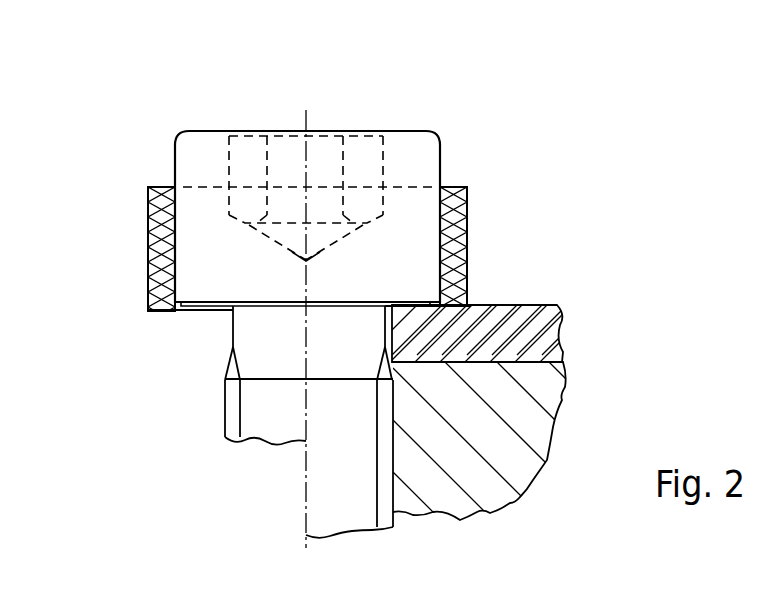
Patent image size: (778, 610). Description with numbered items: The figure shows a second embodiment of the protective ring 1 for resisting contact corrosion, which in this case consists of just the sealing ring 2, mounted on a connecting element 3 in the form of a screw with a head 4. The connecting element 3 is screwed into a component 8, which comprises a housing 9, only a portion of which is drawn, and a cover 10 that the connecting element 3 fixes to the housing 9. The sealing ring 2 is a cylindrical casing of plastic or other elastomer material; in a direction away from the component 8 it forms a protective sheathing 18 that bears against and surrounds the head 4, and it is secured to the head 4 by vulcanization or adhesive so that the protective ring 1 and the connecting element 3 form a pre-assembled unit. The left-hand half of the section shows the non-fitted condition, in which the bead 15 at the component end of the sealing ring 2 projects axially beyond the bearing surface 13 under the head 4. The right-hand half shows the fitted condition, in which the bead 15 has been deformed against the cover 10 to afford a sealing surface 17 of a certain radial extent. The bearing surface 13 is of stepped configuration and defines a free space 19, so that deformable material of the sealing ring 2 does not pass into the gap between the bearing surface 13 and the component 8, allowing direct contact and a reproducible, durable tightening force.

The protective ring 1 is at (352, 207).
The sealing ring 2 is at (452, 243).
The connecting element 3 is at (404, 129).
The head 4 is at (417, 156).
The component 8 is at (525, 503).
The housing 9 is at (430, 498).
The cover 10 is at (536, 336).
The bearing surface 13 is at (207, 310).
The bead 15 is at (160, 313).
The sealing surface 17 is at (475, 303).
The protective sheathing 18 is at (155, 208).
The free space 19 is at (180, 309).